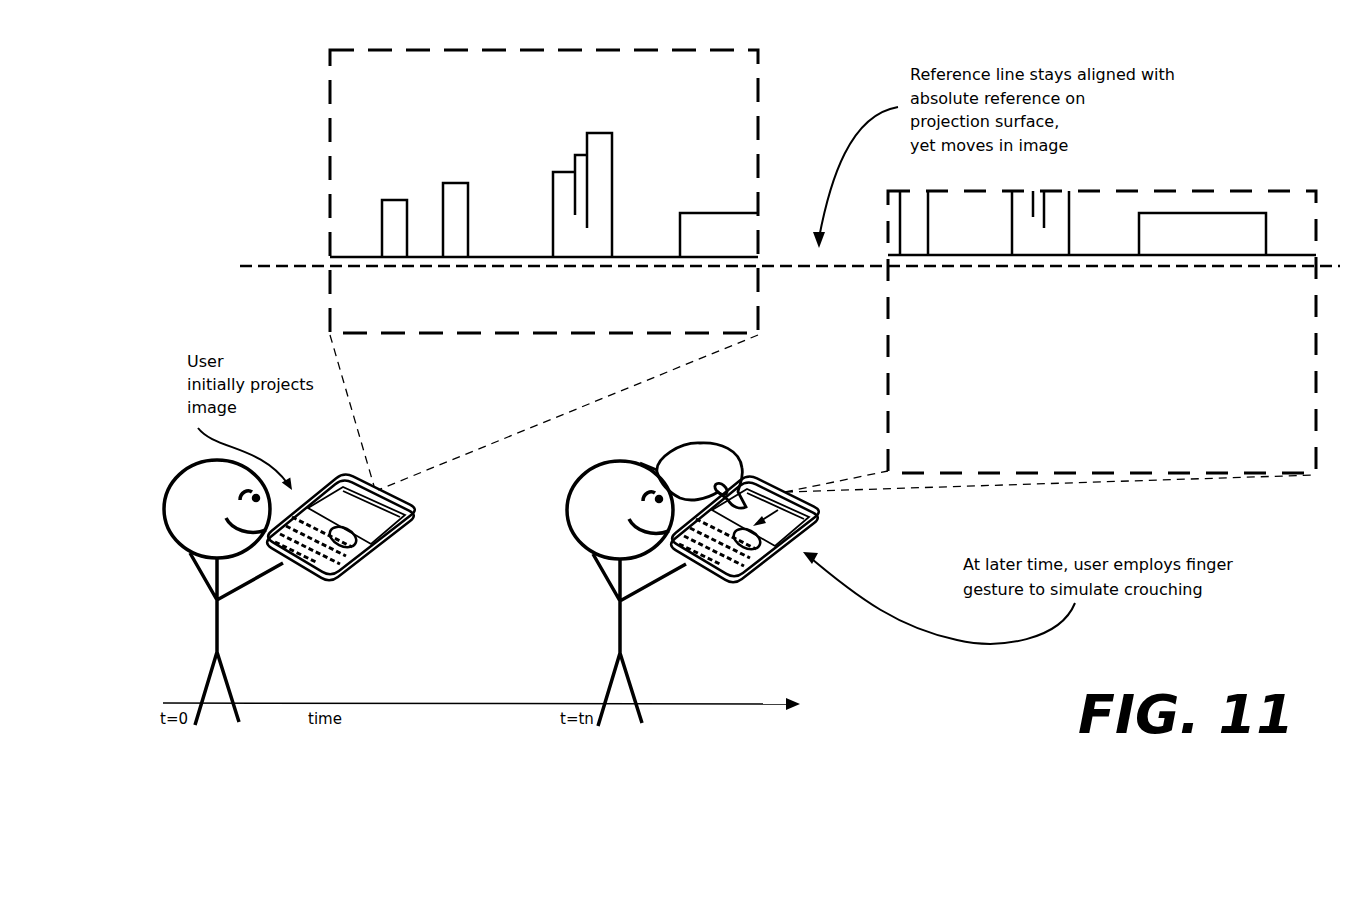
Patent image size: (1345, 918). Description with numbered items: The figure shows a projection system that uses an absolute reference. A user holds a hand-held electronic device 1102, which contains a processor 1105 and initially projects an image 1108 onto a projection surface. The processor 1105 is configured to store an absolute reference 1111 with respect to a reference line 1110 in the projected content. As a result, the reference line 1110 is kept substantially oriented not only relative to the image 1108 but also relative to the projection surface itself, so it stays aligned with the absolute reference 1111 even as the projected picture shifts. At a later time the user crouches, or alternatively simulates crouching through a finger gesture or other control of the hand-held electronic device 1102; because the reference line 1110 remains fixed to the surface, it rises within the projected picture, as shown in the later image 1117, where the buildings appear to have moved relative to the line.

The hand-held electronic device 1102 is at (320, 487).
The processor 1105 is at (383, 545).
The image 1108 is at (330, 130).
The reference line 1110 is at (294, 257).
The absolute reference 1111 is at (303, 267).
The image 1117 is at (1104, 190).